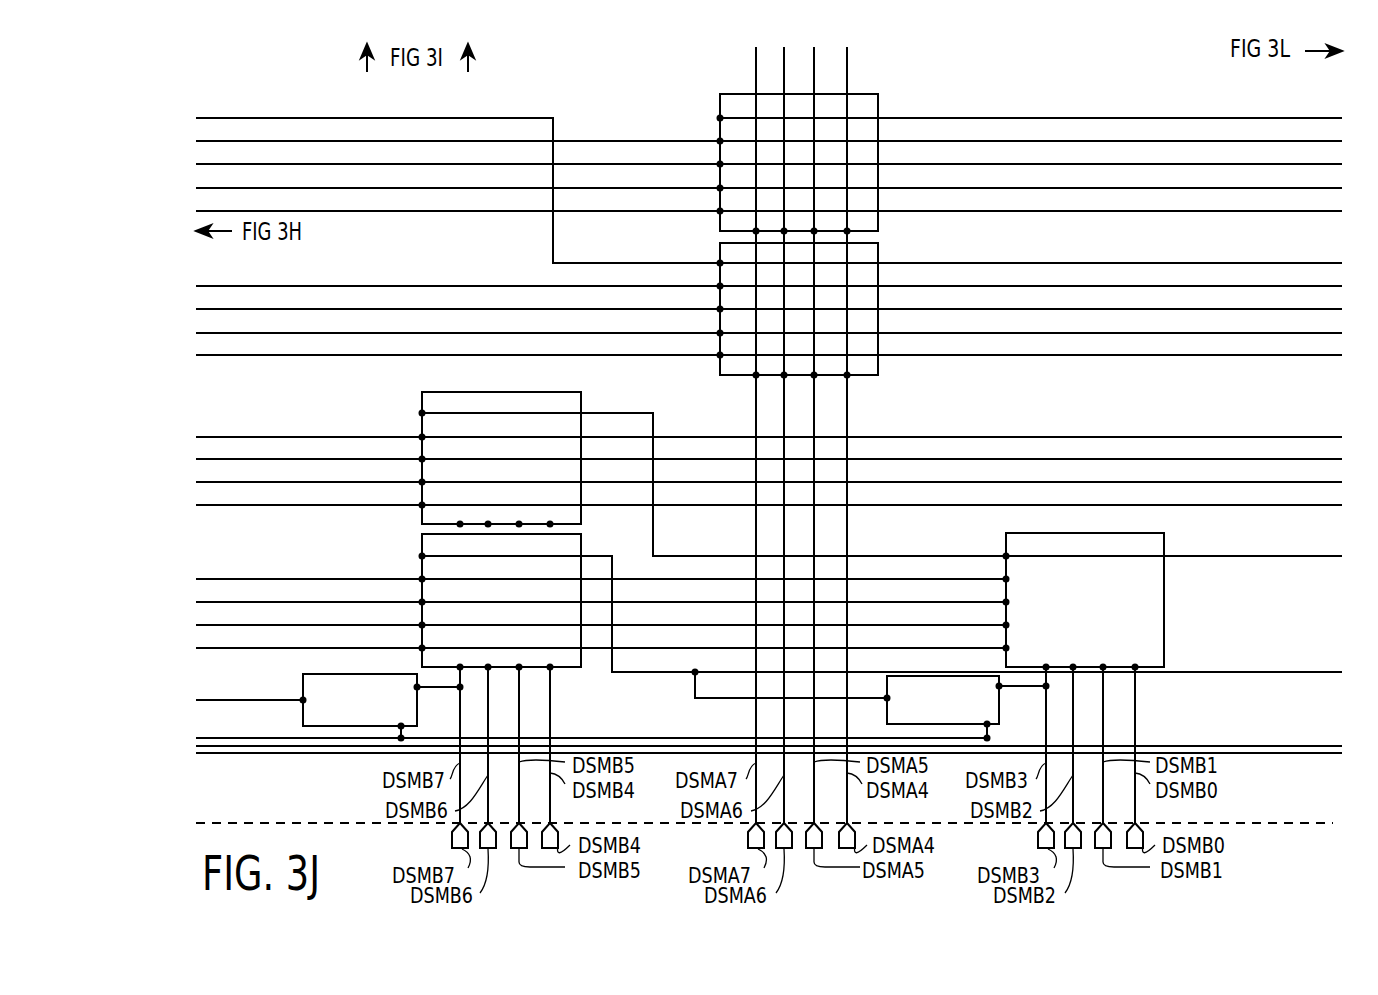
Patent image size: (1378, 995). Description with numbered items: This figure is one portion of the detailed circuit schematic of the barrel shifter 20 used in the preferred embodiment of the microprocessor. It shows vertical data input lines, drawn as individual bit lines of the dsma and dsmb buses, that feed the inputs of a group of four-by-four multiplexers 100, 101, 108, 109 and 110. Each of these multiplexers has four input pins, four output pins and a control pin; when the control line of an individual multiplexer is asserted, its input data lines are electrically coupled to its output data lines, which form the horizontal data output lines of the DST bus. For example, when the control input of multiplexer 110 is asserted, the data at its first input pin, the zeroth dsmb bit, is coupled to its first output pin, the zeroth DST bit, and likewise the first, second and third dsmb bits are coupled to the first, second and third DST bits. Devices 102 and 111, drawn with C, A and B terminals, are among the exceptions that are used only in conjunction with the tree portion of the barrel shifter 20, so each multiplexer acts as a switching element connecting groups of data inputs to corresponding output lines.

The barrel shifter 20 is at (1317, 825).
The multiplexer 100 is at (581, 395).
The multiplexer 101 is at (581, 543).
The multiplexer 102 is at (304, 673).
The multiplexer 108 is at (892, 97).
The multiplexer 109 is at (878, 248).
The multiplexer 110 is at (1164, 541).
The multiplexer 111 is at (1015, 699).